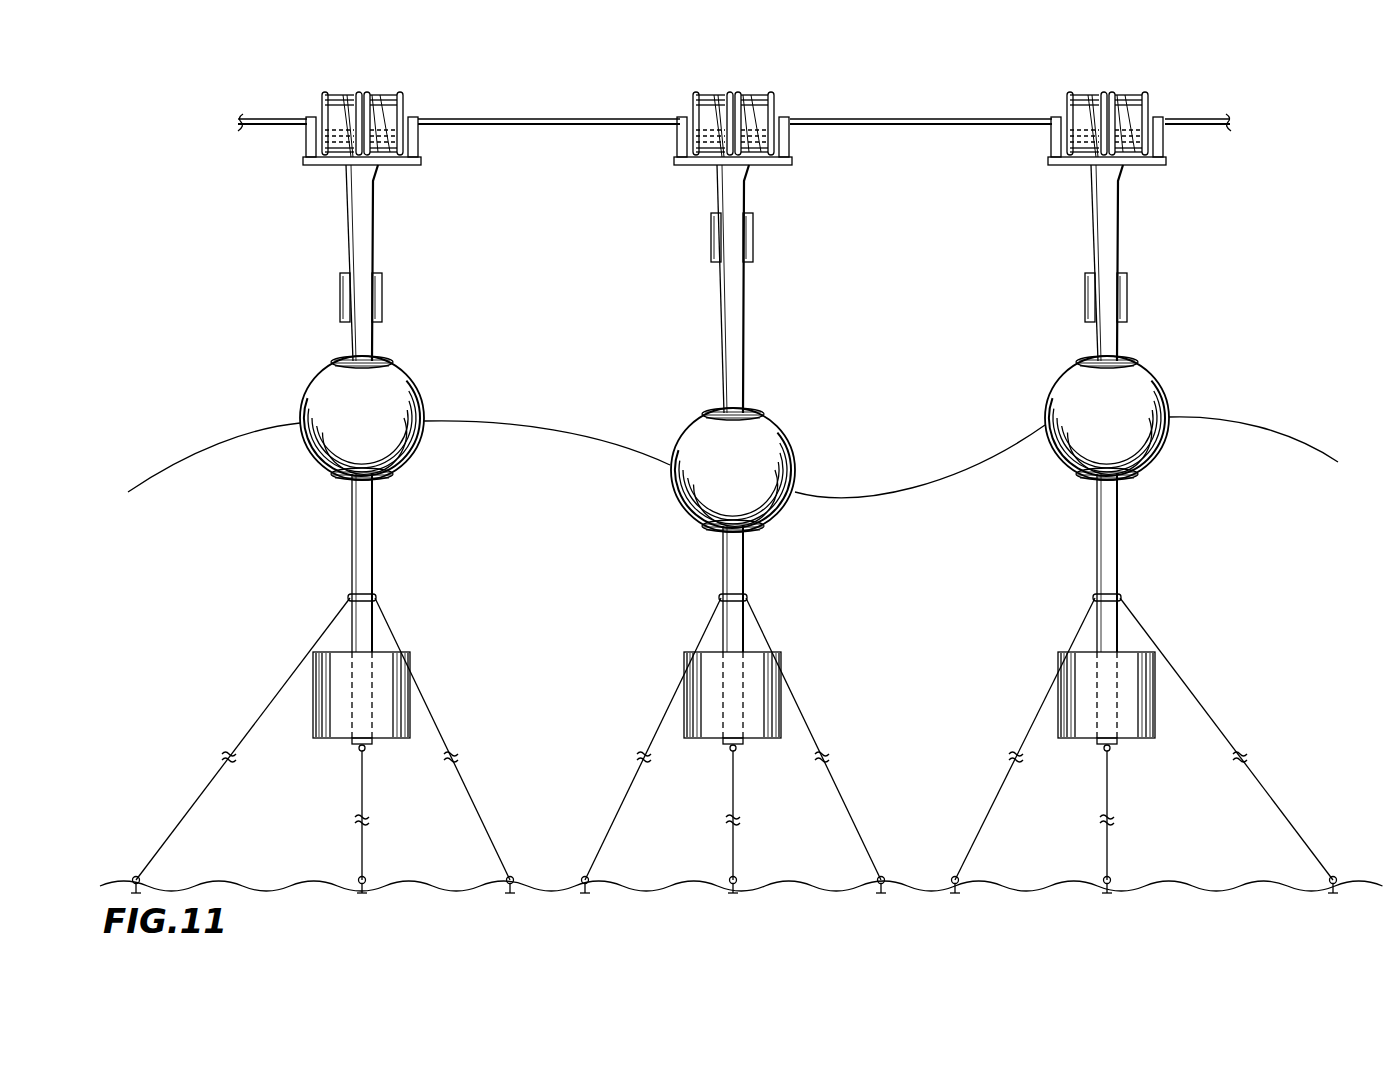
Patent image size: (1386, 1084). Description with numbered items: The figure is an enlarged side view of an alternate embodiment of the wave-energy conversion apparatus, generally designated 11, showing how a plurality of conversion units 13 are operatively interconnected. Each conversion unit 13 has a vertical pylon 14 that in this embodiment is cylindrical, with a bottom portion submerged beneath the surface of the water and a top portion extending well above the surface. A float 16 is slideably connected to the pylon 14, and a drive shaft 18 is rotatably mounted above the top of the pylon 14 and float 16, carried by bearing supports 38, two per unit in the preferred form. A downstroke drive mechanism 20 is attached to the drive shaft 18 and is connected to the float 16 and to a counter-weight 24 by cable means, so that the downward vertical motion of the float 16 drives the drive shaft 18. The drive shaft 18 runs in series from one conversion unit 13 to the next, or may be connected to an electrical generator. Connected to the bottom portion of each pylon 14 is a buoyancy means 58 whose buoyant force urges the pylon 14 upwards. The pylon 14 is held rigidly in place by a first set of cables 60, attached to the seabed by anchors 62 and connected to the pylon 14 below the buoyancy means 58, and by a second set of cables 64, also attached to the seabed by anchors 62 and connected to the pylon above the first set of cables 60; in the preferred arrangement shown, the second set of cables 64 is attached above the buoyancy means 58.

The alternate embodiment of the apparatus 11 is at (1288, 93).
The conversion unit 13 is at (305, 236).
The vertical pylon 14 is at (375, 210).
The float 16 is at (418, 388).
The drive shaft 18 is at (905, 118).
The downstroke drive mechanism 20 is at (380, 95).
The counter-weight 24 is at (340, 298).
The bearing support 38 is at (307, 152).
The buoyancy means 58 is at (337, 740).
The first set of cables 60 is at (363, 790).
The anchors 62 is at (138, 880).
The second set of cables 64 is at (320, 632).